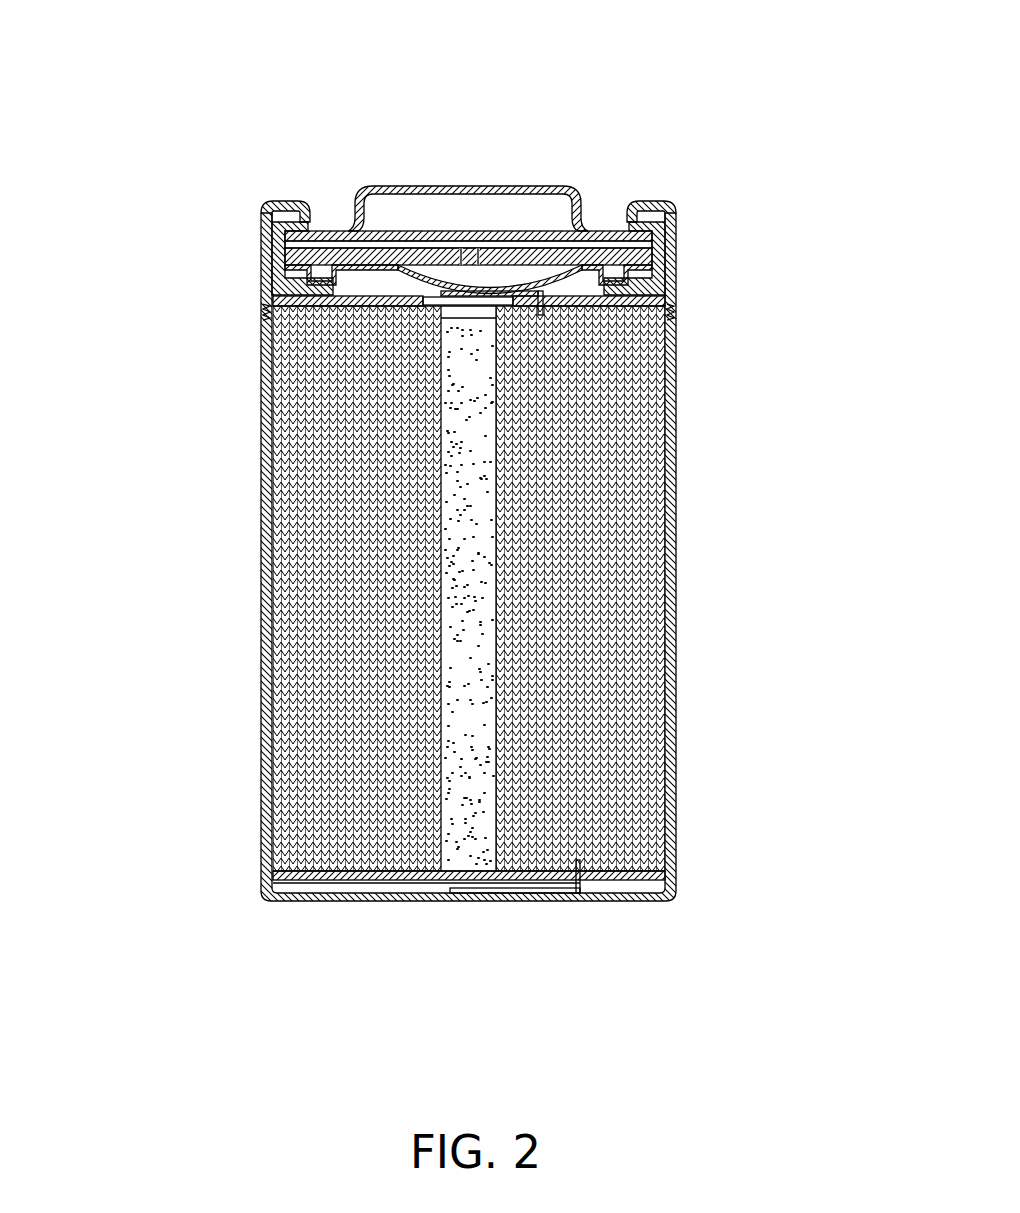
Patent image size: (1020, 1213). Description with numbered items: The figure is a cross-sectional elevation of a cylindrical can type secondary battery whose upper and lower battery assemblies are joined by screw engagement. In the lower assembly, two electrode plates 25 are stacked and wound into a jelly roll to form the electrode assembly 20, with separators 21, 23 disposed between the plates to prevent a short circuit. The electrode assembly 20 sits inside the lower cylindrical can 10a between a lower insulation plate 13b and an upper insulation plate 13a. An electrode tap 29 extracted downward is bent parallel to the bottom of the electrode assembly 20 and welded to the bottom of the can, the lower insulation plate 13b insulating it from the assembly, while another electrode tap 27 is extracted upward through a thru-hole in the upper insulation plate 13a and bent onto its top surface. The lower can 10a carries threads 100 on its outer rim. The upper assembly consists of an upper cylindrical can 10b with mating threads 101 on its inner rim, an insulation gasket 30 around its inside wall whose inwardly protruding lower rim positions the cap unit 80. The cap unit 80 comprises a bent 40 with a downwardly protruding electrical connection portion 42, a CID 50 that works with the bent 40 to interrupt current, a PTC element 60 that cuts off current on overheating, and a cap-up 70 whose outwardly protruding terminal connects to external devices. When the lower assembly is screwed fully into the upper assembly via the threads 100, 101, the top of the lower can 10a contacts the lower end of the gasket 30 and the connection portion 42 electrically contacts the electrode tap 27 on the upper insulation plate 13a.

The lower cylindrical can 10a is at (253, 340).
The upper cylindrical can 10b is at (253, 260).
The upper insulation plate 13a is at (535, 282).
The lower insulation plate 13b is at (347, 873).
The electrode assembly 20 is at (557, 582).
The separator 21 is at (627, 467).
The separator 23 is at (526, 588).
The electrode plate 25 is at (650, 347).
The electrode tap 27 is at (665, 305).
The electrode tap 29 is at (560, 893).
The insulation gasket 30 is at (660, 197).
The bent 40 is at (468, 191).
The electrical connection portion 42 is at (415, 260).
The CID 50 is at (527, 247).
The PTC element 60 is at (608, 230).
The cap-up 70 is at (467, 178).
The cap unit 80 is at (600, 75).
The threads 100 is at (179, 305).
The mating threads 101 is at (260, 290).